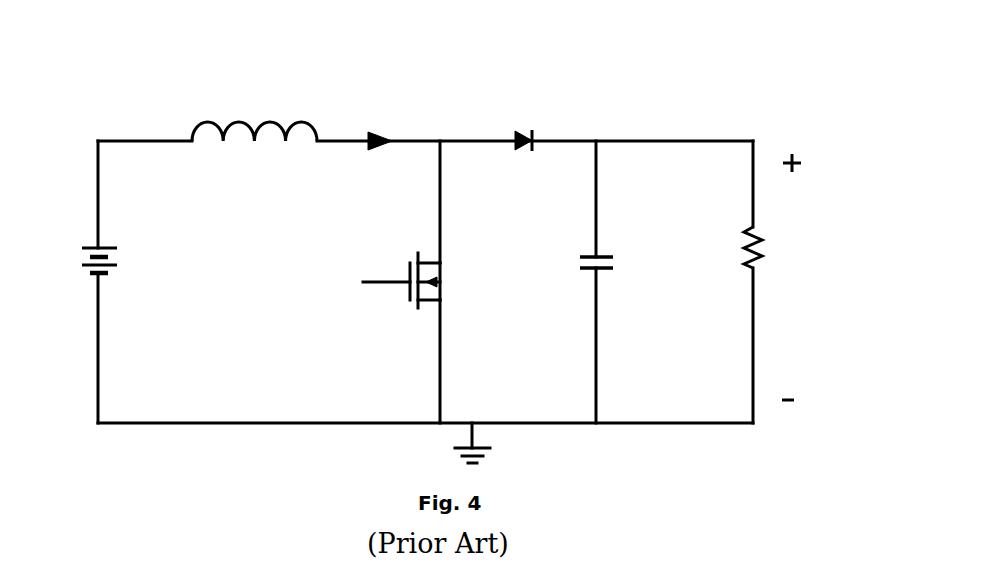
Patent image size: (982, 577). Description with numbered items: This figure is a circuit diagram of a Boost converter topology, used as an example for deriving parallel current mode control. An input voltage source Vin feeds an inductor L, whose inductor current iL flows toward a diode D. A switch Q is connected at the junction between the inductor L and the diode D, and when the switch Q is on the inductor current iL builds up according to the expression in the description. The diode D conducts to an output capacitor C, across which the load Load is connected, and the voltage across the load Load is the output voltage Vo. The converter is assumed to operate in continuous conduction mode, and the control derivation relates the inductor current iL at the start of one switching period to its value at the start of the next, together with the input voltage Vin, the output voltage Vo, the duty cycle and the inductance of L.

The inductor L is at (254, 113).
The inductor current iL is at (393, 118).
The diode D is at (528, 122).
The switch Q is at (423, 282).
The capacitor C is at (577, 274).
The input voltage Vin is at (121, 277).
The load Load is at (707, 256).
The output voltage Vo is at (799, 277).